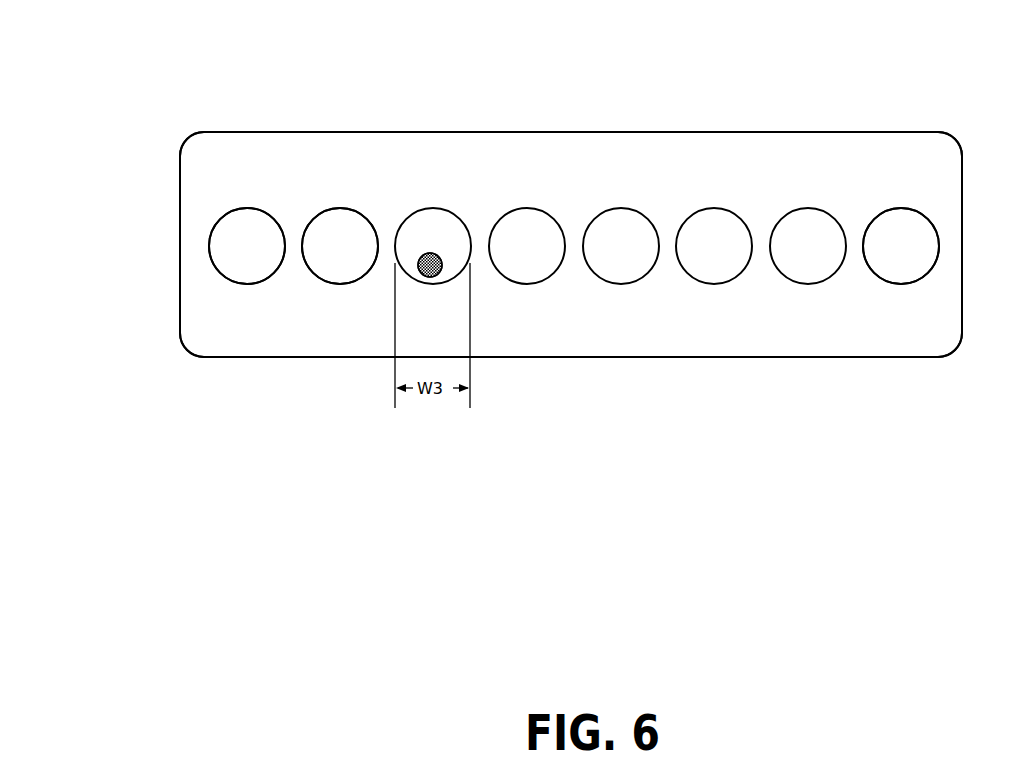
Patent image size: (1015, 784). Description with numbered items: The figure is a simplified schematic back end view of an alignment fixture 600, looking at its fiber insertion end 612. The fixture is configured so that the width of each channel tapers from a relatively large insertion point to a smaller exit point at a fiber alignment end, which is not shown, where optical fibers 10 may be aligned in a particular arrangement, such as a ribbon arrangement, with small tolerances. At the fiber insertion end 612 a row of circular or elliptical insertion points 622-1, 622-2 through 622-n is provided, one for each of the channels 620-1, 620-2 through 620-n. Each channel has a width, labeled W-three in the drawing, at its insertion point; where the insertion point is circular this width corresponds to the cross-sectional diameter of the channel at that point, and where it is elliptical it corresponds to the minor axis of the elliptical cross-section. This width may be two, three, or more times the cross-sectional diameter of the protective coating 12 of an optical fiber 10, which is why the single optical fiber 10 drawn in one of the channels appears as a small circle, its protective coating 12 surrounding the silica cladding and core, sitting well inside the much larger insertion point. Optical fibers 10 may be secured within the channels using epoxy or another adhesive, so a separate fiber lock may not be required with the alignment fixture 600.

The alignment fixture 600 is at (180, 112).
The fiber insertion end 612 is at (723, 152).
The insertion point 622-1 is at (258, 220).
The insertion point 622-2 is at (350, 220).
The insertion point 622-n is at (908, 218).
The channel 620-1 is at (248, 284).
The channel 620-2 is at (341, 284).
The channel 620-n is at (898, 284).
The optical fiber 10 is at (440, 252).
The protective coating 12 is at (428, 253).